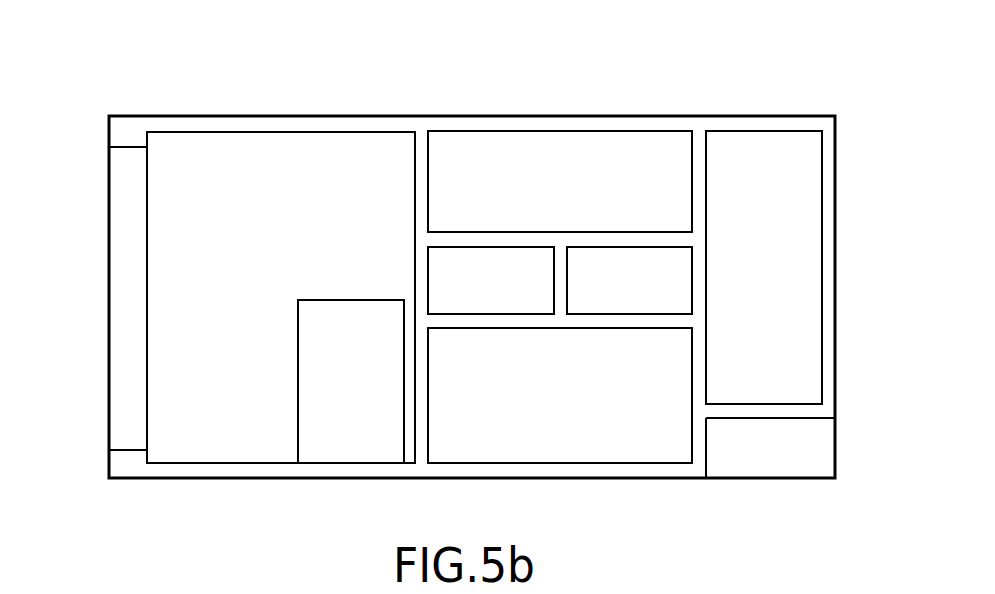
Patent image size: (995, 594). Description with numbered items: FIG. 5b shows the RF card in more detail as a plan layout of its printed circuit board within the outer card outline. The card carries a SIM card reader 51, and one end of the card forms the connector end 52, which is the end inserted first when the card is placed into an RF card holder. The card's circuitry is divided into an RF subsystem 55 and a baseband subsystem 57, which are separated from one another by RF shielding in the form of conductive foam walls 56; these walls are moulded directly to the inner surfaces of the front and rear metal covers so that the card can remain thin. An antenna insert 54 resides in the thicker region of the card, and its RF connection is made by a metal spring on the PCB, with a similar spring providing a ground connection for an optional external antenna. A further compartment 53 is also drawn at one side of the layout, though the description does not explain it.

The SIM card reader 51 is at (327, 455).
The connector end 52 is at (120, 345).
The right vertical region 53 is at (808, 230).
The antenna insert 54 is at (790, 462).
The RF subsystem 55 is at (587, 141).
The conductive foam walls 56 is at (609, 452).
The baseband subsystem 57 is at (309, 140).